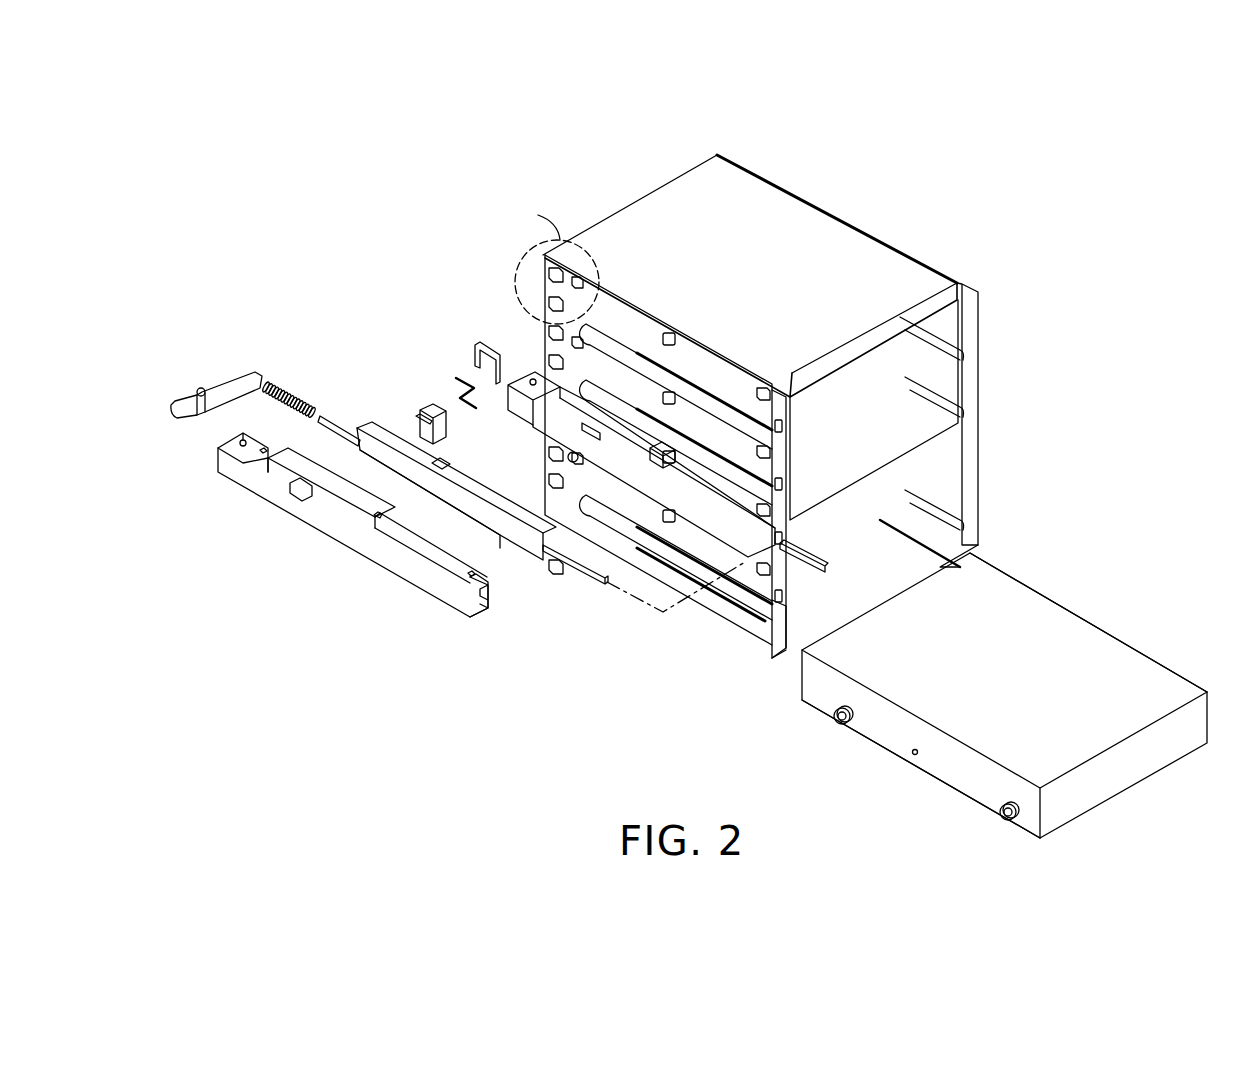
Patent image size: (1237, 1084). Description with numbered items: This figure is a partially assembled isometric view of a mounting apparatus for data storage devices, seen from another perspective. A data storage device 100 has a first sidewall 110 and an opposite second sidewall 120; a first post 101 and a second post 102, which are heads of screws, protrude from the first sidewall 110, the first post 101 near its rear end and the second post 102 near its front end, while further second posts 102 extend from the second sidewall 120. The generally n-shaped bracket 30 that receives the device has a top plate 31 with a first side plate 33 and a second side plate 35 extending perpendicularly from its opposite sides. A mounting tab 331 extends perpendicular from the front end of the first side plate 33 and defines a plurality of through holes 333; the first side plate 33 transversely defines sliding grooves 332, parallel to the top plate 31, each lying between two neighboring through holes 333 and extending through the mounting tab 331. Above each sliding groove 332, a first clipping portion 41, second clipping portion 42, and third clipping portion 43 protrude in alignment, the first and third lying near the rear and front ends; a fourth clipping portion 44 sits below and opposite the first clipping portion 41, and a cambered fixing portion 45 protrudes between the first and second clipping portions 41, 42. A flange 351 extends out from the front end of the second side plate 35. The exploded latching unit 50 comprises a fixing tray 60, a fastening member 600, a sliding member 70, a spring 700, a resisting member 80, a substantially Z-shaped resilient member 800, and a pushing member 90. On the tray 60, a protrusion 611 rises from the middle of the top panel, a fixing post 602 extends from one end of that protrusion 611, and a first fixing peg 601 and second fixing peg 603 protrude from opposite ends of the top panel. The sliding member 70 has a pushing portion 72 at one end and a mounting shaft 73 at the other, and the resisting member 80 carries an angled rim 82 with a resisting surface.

The bracket 30 is at (885, 232).
The top plate 31 is at (775, 212).
The first side plate 33 is at (707, 590).
The second side plate 35 is at (975, 546).
The first clipping portion 41 is at (548, 272).
The second clipping portion 42 is at (670, 333).
The third clipping portion 43 is at (762, 386).
The fourth clipping portion 44 is at (550, 302).
The fixing portion 45 is at (577, 278).
The latching unit 50 is at (745, 530).
The fixing tray 60 is at (428, 577).
The sliding member 70 is at (505, 527).
The pushing portion 72 is at (588, 578).
The mounting shaft 73 is at (338, 428).
The resisting member 80 is at (422, 410).
The angled rim 82 is at (420, 418).
The pushing member 90 is at (950, 445).
The data storage device 100 is at (1130, 668).
The first post 101 is at (835, 728).
The second post 102 is at (1000, 815).
The first sidewall 110 is at (940, 762).
The second sidewall 120 is at (1078, 612).
The mounting tab 331 is at (778, 650).
The sliding groove 332 is at (548, 333).
The through hole 333 is at (784, 428).
The flange 351 is at (972, 312).
The fastening member 600 is at (490, 343).
The first fixing peg 601 is at (250, 468).
The fixing post 602 is at (375, 520).
The second fixing peg 603 is at (468, 580).
The protrusion 611 is at (330, 492).
The spring 700 is at (296, 392).
The resilient member 800 is at (458, 378).